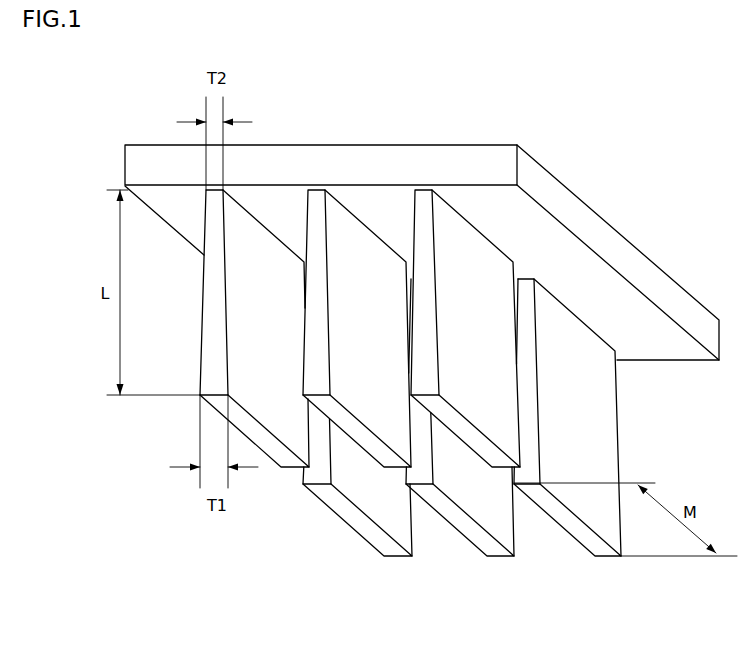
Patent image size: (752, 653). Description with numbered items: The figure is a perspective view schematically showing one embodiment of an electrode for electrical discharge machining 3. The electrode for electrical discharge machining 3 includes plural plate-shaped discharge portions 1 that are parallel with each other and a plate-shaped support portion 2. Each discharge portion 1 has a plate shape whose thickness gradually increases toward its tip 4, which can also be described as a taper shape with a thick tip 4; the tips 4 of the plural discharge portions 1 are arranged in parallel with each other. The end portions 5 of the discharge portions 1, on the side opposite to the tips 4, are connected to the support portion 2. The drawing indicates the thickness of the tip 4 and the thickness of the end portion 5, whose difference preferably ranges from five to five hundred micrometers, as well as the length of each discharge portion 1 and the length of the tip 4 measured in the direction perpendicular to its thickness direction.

The discharge portion 1 is at (519, 533).
The support portion 2 is at (656, 259).
The electrode for electrical discharge machining 3 is at (695, 88).
The tip 4 is at (337, 504).
The end portion 5 is at (252, 214).